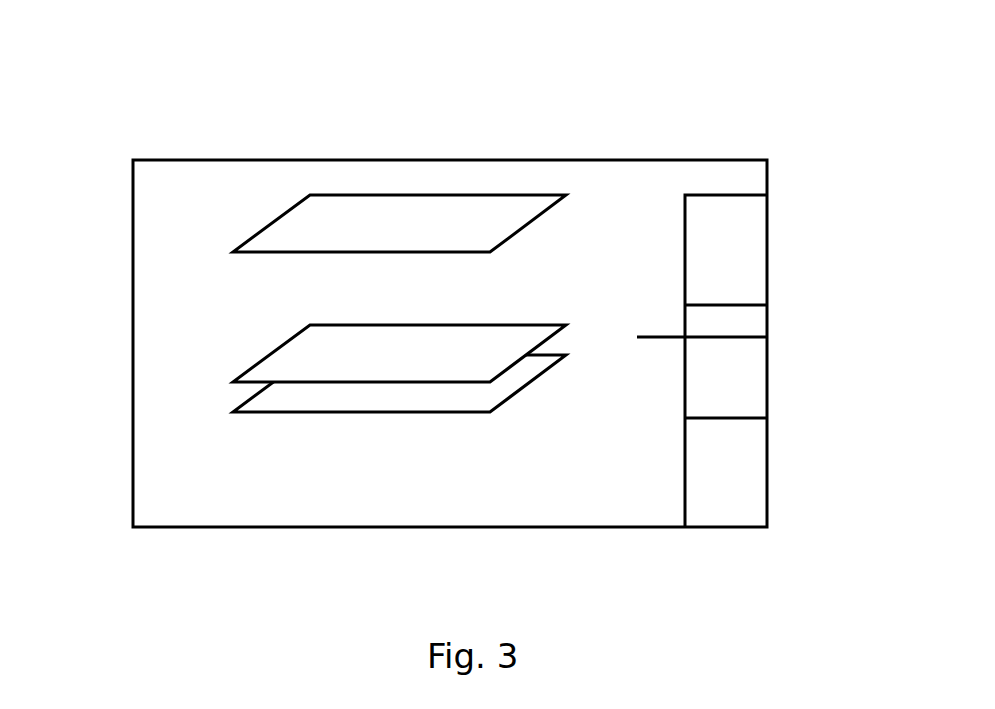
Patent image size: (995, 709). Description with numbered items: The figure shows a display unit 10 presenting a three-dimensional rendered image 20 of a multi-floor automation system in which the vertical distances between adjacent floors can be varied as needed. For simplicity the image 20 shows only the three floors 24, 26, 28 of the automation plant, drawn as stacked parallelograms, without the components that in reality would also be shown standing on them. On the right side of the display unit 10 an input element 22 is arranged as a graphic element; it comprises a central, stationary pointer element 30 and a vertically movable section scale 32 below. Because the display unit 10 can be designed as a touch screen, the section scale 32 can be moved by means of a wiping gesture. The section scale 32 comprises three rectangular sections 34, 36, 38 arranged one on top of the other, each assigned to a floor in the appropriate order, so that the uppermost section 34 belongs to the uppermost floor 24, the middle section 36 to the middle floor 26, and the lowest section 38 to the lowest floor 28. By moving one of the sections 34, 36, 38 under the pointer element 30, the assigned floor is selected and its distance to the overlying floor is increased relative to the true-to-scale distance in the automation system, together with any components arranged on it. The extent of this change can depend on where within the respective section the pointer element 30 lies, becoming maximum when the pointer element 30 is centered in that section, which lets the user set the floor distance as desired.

The display unit 10 is at (647, 160).
The image 20 is at (192, 217).
The input element 22 is at (790, 307).
The uppermost floor 24 is at (287, 205).
The middle floor 26 is at (273, 347).
The lowermost floor 28 is at (245, 403).
The pointer element 30 is at (655, 335).
The section scale 32 is at (683, 372).
The uppermost section 34 is at (743, 258).
The middle section 36 is at (725, 380).
The lowermost section 38 is at (742, 468).